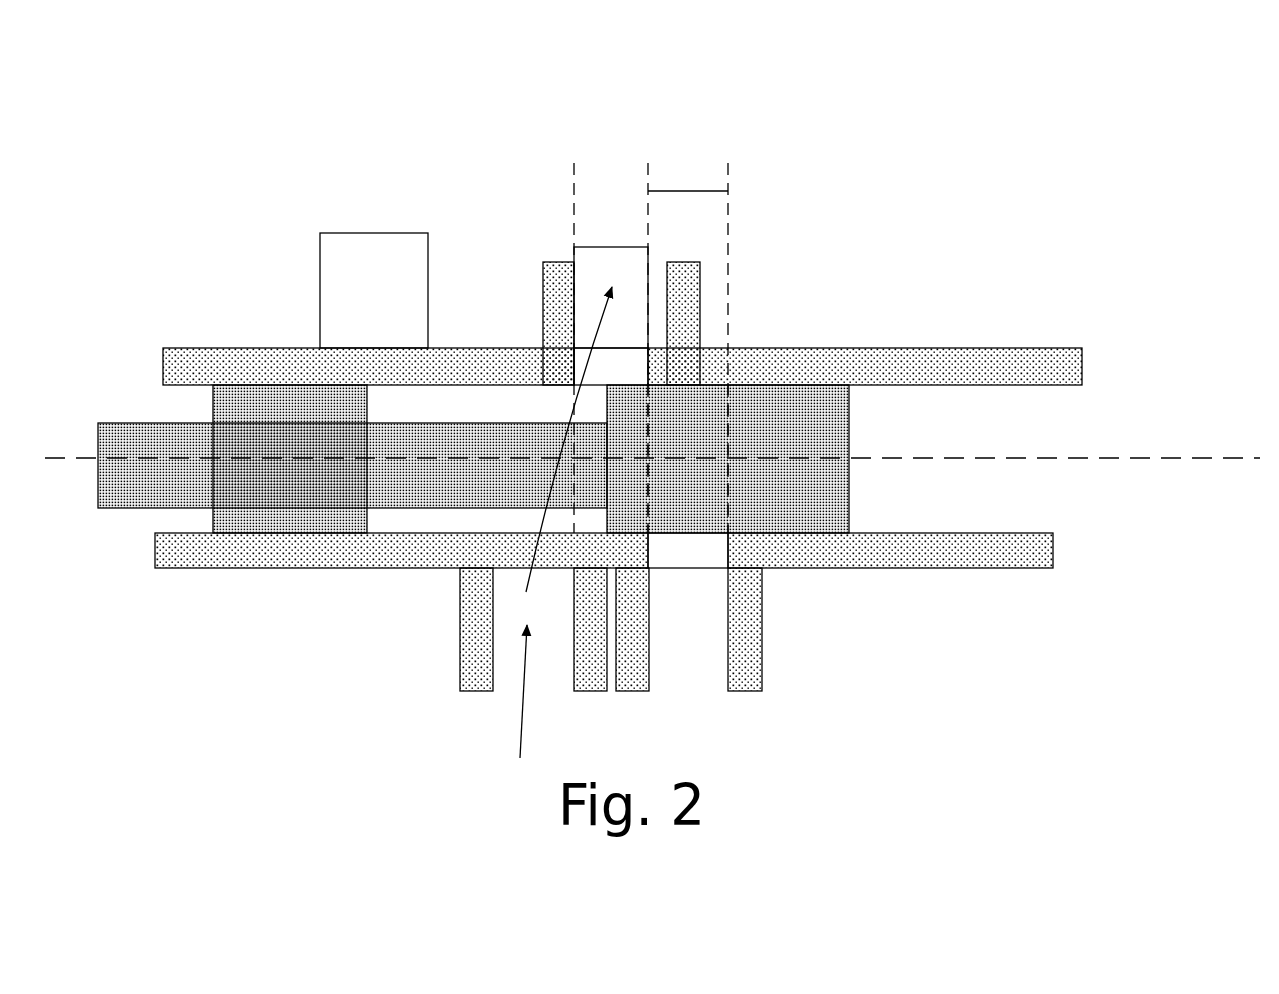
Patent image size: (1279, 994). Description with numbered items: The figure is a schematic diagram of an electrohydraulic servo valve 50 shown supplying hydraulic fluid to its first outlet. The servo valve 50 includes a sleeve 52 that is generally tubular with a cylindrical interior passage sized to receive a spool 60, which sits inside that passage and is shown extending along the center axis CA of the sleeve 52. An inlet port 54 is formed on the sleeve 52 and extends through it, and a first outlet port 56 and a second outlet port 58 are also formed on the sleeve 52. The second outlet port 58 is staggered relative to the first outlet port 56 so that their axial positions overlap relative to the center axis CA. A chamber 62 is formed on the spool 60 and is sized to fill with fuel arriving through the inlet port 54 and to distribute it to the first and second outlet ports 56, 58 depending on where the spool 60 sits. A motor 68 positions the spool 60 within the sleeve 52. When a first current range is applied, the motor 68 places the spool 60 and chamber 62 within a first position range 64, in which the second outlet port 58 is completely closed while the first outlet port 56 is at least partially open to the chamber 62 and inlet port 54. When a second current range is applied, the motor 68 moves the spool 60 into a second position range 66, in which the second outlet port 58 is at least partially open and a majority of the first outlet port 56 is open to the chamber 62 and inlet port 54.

The servo valve 50 is at (984, 116).
The sleeve 52 is at (1000, 362).
The inlet port 54 is at (504, 673).
The first outlet port 56 is at (583, 307).
The second outlet port 58 is at (698, 646).
The spool 60 is at (822, 432).
The chamber 62 is at (418, 507).
The first position range 64 is at (611, 246).
The second position range 66 is at (687, 190).
The motor 68 is at (390, 301).
The center axis CA is at (1170, 457).